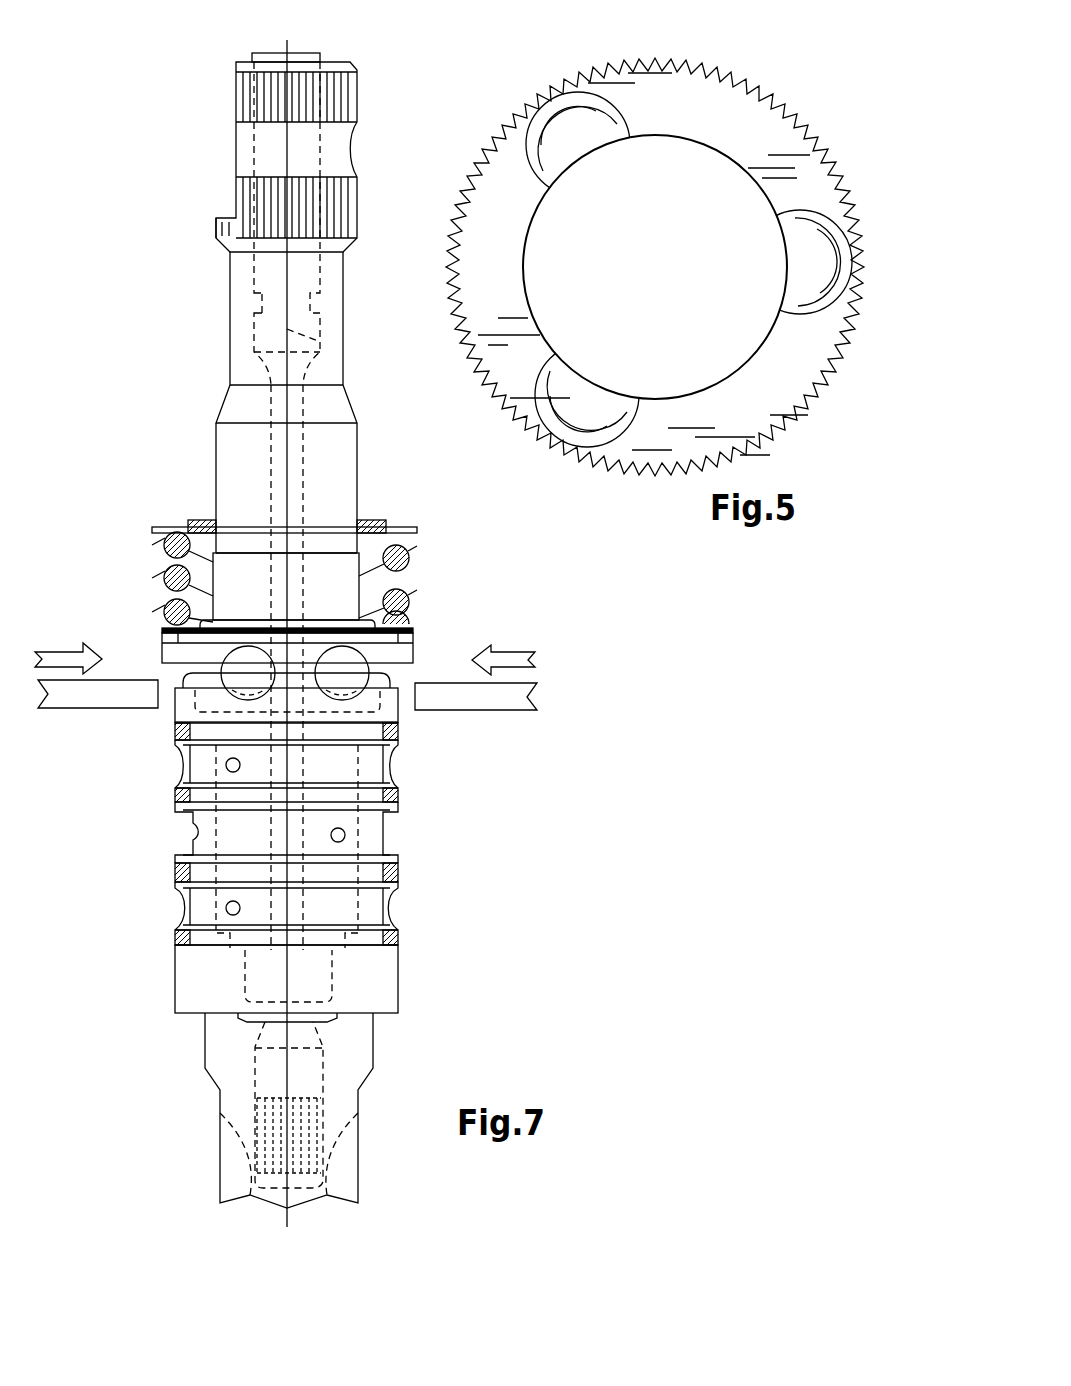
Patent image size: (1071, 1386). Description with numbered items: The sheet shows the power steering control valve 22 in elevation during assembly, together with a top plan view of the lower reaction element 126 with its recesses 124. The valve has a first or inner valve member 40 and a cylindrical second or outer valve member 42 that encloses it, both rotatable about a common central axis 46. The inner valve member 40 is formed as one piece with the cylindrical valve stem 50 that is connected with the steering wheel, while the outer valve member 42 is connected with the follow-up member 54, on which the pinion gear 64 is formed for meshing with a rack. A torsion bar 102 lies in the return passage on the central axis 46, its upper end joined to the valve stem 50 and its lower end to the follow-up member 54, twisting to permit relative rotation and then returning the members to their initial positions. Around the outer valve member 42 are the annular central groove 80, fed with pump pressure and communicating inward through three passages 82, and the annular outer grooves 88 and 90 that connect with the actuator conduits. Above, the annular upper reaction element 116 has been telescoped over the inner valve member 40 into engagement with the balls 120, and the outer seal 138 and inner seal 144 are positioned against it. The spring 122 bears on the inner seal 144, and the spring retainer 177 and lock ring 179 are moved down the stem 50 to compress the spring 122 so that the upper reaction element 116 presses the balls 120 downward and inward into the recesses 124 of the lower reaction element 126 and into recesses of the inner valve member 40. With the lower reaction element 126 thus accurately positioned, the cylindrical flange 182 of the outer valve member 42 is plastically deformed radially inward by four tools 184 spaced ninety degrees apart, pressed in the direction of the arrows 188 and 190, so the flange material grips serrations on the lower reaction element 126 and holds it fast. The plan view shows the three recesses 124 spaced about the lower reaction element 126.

In FIG. 7, the power steering control valve 22 is at (412, 499).
In FIG. 7, the inner valve member 40 is at (213, 464).
In FIG. 7, the outer valve member 42 is at (142, 904).
In FIG. 7, the central axis 46 is at (347, 342).
In FIG. 7, the valve stem 50 is at (233, 283).
In FIG. 7, the follow-up member 54 is at (233, 1050).
In FIG. 7, the pinion gear 64 is at (250, 1160).
In FIG. 7, the annular central groove 80 is at (182, 846).
In FIG. 7, the passages 82 is at (195, 830).
In FIG. 7, the annular outer groove 88 is at (392, 762).
In FIG. 7, the annular outer groove 90 is at (393, 910).
In FIG. 7, the torsion bar 102 is at (271, 408).
In FIG. 7, the upper reaction element 116 is at (172, 658).
In FIG. 7, the balls 120 is at (245, 668).
In FIG. 7, the spring 122 is at (410, 555).
In FIG. 5, the recesses 124 is at (555, 137).
In FIG. 5, the lower reaction element 126 is at (793, 93).
In FIG. 7, the lower reaction element 126 is at (175, 678).
In FIG. 7, the outer seal 138 is at (413, 640).
In FIG. 7, the inner seal 144 is at (232, 576).
In FIG. 7, the spring retainer 177 is at (152, 526).
In FIG. 7, the lock ring 179 is at (375, 520).
In FIG. 7, the cylindrical flange 182 is at (395, 717).
In FIG. 7, the tools 184 is at (100, 697).
In FIG. 7, the arrow 188 is at (62, 658).
In FIG. 7, the arrow 190 is at (538, 659).